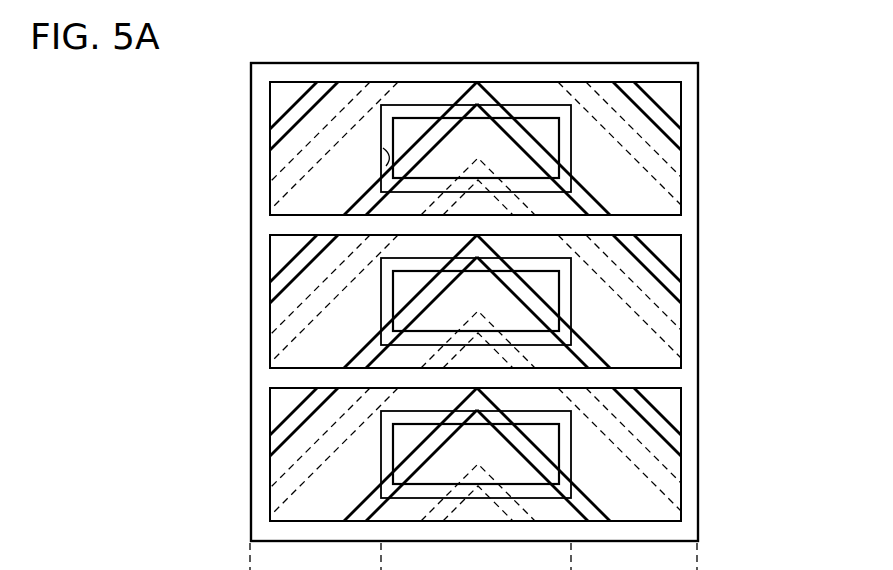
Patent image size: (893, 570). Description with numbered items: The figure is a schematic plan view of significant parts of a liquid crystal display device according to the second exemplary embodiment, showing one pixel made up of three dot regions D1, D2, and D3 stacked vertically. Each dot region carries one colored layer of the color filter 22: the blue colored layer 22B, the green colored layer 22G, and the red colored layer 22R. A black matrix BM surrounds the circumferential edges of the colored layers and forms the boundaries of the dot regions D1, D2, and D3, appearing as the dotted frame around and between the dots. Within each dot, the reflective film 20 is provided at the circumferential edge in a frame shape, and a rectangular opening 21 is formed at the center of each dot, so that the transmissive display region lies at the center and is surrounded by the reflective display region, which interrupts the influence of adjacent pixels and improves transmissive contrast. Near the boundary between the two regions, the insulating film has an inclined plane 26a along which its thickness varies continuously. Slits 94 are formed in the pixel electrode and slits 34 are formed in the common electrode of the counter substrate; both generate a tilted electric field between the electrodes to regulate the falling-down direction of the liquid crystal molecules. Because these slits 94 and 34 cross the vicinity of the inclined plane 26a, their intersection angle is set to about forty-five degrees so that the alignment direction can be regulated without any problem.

The color filter 22 is at (698, 80).
The blue colored layer 22B is at (686, 162).
The green colored layer 22G is at (663, 318).
The red colored layer 22R is at (668, 498).
The reflective film 20 is at (657, 258).
The rectangular opening 21 is at (392, 286).
The inclined plane 26a is at (568, 118).
The slit 34 is at (470, 478).
The slit 94 is at (530, 448).
The black matrix BM is at (258, 408).
The dot region D1 is at (286, 176).
The dot region D2 is at (280, 336).
The dot region D3 is at (280, 486).